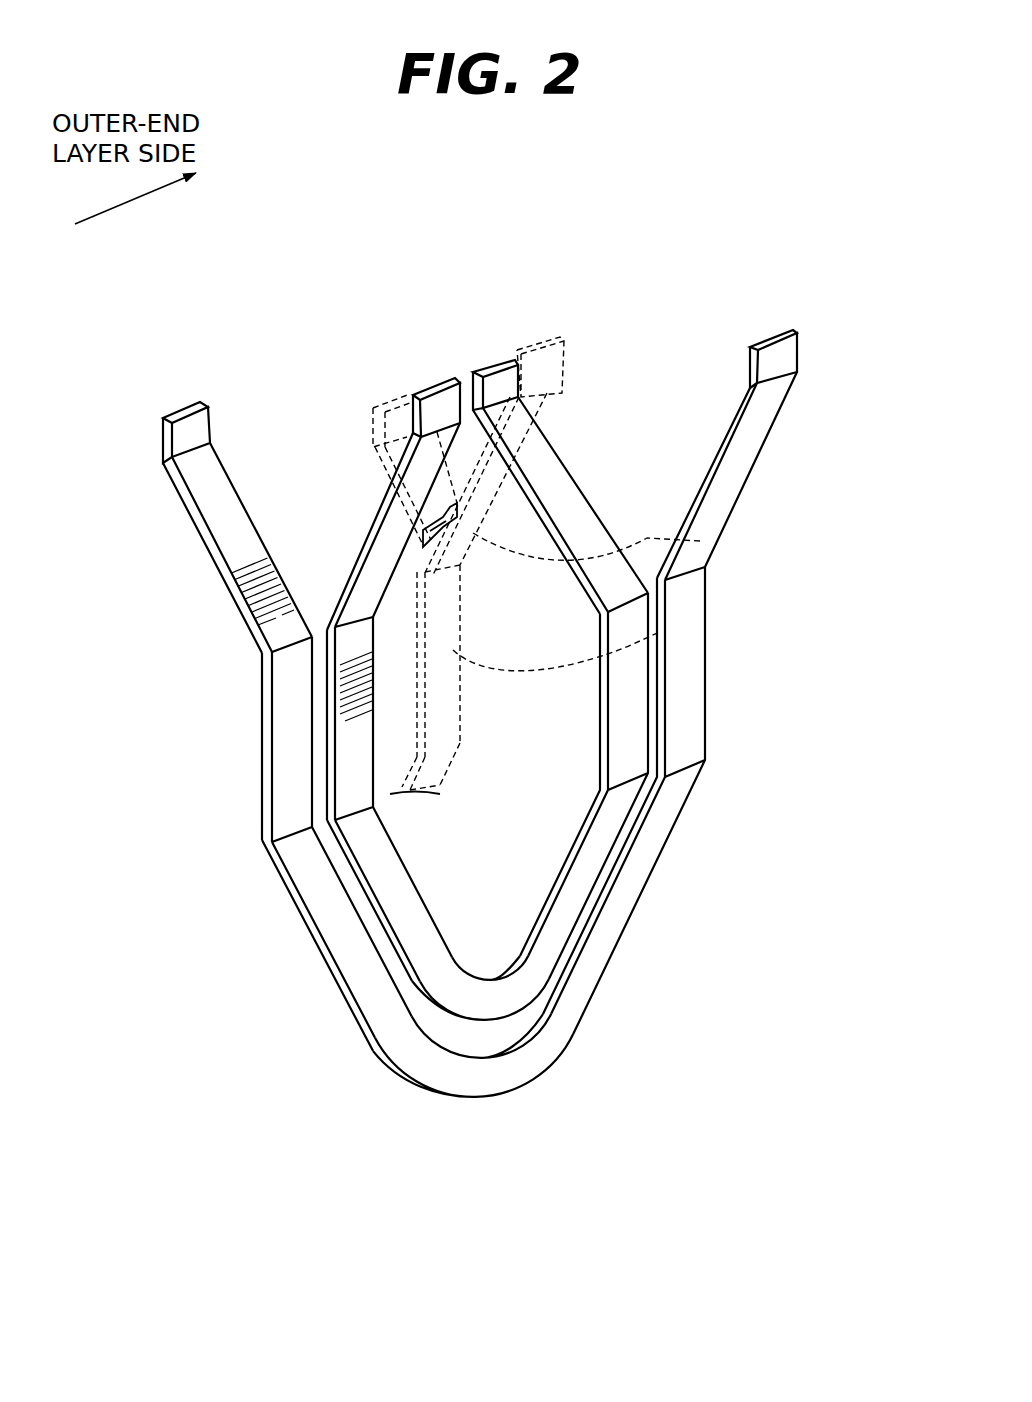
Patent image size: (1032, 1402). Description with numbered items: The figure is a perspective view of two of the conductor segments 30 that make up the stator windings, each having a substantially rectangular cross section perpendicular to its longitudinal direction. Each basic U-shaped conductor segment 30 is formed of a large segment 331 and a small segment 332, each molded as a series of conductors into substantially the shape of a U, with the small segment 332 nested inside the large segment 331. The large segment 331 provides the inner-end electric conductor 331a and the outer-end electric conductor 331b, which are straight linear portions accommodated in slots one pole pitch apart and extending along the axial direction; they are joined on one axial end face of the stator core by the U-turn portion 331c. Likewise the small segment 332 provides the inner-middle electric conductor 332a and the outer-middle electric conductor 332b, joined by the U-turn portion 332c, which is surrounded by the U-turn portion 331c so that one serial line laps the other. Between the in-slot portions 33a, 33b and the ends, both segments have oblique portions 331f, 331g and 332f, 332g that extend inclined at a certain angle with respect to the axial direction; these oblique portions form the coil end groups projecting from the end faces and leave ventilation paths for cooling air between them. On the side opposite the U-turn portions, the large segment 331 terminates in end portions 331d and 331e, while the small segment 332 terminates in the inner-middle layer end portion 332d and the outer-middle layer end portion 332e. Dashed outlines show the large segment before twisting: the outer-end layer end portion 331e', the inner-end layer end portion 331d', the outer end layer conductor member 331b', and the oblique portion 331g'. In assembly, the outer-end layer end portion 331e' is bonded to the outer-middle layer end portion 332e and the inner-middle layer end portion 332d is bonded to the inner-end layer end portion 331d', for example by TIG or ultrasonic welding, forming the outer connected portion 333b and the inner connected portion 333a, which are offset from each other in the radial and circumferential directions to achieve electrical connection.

The conductor segment 30 is at (374, 1066).
The in-slot conductor portion 33a is at (310, 994).
The in-slot conductor portion 33b is at (184, 549).
The large segment 331 is at (750, 482).
The inner-end electric conductor 331a is at (290, 694).
The outer-end electric conductor 331b is at (706, 800).
The outer end layer conductor member 331b' is at (631, 647).
The U-turn portion 331c is at (468, 1085).
The end portion of large segment 331d is at (112, 439).
The inner-end layer end portion 331d' is at (381, 431).
The end portion of large segment 331e is at (844, 359).
The outer-end layer end portion 331e' is at (527, 526).
The oblique portion 331f is at (330, 922).
The oblique portion 331g is at (478, 512).
The oblique portion before twisting 331g' is at (641, 549).
The small segment 332 is at (627, 512).
The inner-middle electric conductor 332a is at (355, 767).
The outer-middle electric conductor 332b is at (627, 758).
The U-turn portion 332c is at (484, 1008).
The inner-middle layer end portion 332d is at (437, 399).
The outer-middle layer end portion 332e is at (498, 373).
The oblique portion 332f is at (572, 882).
The oblique portion 332g is at (370, 575).
The inner connected portion 333a is at (397, 358).
The outer connected portion 333b is at (530, 310).